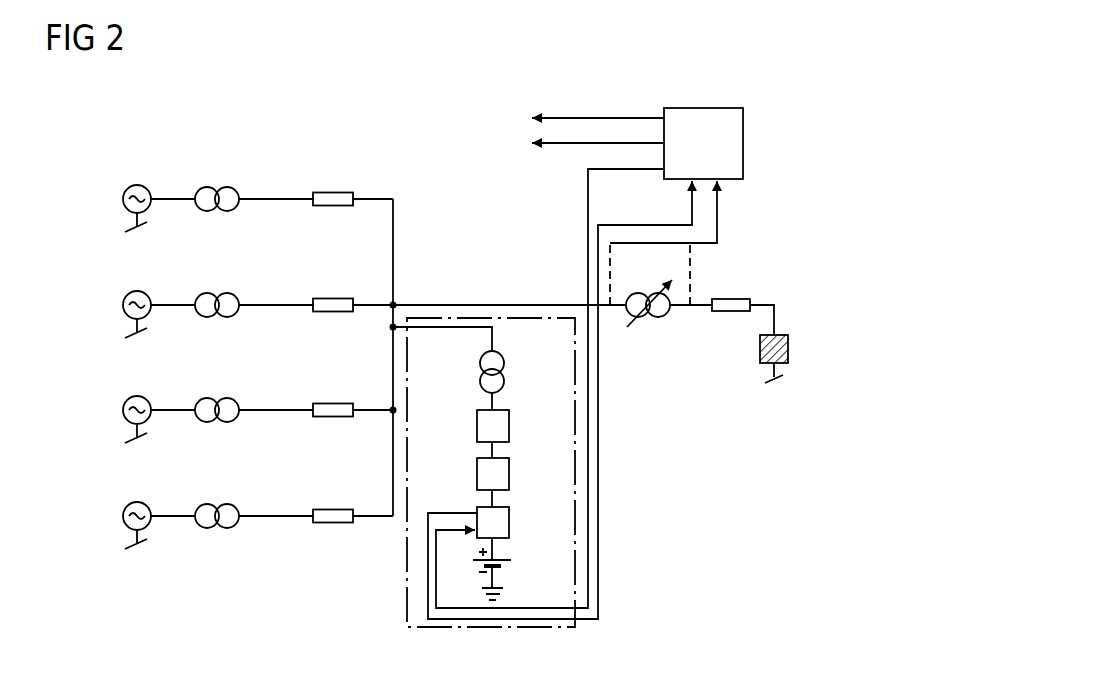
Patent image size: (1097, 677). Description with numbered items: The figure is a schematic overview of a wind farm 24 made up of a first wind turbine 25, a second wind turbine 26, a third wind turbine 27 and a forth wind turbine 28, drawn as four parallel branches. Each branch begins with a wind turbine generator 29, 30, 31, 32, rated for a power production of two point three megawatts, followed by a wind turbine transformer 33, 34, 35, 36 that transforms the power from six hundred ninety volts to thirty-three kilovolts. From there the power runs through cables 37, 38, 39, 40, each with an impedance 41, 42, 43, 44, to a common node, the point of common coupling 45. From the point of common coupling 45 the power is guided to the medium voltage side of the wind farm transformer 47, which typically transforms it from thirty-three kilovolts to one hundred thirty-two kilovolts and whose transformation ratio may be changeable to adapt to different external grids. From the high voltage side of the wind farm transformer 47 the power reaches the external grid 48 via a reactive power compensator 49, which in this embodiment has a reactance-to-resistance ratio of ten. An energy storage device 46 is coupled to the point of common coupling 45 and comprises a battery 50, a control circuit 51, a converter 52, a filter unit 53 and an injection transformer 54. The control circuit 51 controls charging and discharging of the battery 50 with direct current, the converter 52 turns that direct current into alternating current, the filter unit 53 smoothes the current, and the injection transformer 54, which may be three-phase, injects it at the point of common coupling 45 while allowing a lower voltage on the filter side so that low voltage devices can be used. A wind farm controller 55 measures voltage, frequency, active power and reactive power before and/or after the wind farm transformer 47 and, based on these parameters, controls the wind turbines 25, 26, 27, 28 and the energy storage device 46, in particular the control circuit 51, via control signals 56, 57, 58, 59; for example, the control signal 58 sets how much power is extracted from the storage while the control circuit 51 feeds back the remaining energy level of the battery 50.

The wind farm 24 is at (282, 88).
The first wind turbine 25 is at (116, 196).
The second wind turbine 26 is at (219, 288).
The third wind turbine 27 is at (219, 393).
The forth wind turbine 28 is at (219, 499).
The wind turbine generator 29 is at (137, 185).
The wind turbine generator 30 is at (142, 288).
The wind turbine generator 31 is at (142, 393).
The wind turbine generator 32 is at (142, 499).
The wind turbine transformer 33 is at (215, 187).
The wind turbine transformer 34 is at (217, 278).
The wind turbine transformer 35 is at (217, 383).
The wind turbine transformer 36 is at (217, 489).
The cable 37 is at (273, 199).
The cable 38 is at (276, 277).
The cable 39 is at (276, 382).
The cable 40 is at (276, 488).
The impedance 41 is at (332, 192).
The impedance 42 is at (334, 276).
The impedance 43 is at (334, 381).
The impedance 44 is at (334, 487).
The point of common coupling 45 is at (393, 198).
The energy storage device 46 is at (406, 573).
The wind farm transformer 47 is at (648, 317).
The external grid 48 is at (790, 348).
The reactive power compensator 49 is at (730, 298).
The battery 50 is at (503, 565).
The control circuit 51 is at (509, 520).
The converter 52 is at (509, 472).
The filter unit 53 is at (509, 423).
The injection transformer 54 is at (505, 370).
The wind farm controller 55 is at (746, 145).
The control signal 56 is at (587, 117).
The control signal 57 is at (566, 145).
The control signal 58 is at (587, 253).
The control signal 59 is at (600, 443).